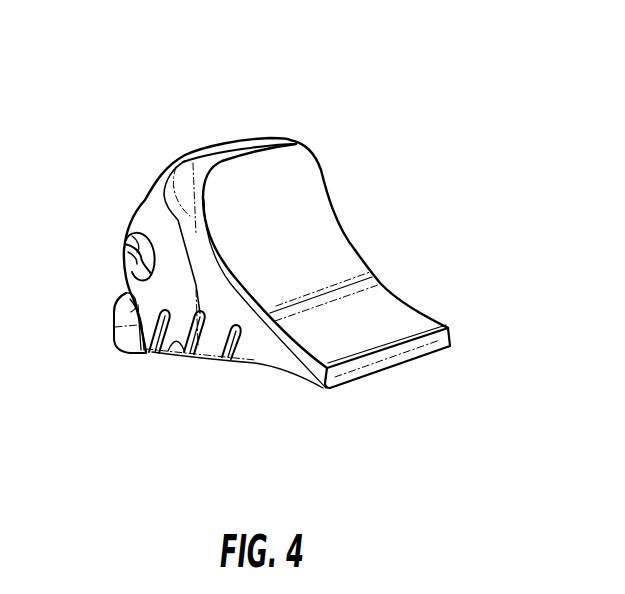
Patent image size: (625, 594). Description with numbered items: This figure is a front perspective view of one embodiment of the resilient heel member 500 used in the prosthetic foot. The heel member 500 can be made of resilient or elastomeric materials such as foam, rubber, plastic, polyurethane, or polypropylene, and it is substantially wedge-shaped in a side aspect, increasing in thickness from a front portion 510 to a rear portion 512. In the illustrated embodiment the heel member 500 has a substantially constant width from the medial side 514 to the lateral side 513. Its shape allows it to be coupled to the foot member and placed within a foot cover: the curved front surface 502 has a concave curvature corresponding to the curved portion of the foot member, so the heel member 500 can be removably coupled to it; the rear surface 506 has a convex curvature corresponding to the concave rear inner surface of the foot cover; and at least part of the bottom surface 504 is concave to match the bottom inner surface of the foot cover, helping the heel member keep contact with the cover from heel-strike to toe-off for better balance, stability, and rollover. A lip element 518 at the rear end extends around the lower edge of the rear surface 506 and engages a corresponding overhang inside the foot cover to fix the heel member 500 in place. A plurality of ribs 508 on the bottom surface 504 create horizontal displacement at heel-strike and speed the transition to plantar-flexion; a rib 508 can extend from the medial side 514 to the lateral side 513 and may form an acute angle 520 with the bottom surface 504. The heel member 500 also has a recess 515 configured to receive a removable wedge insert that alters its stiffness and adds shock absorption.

The heel member 500 is at (405, 187).
The front surface 502 is at (319, 262).
The bottom surface 504 is at (247, 372).
The rear surface 506 is at (139, 202).
The rib 508 is at (157, 351).
The front portion 510 is at (462, 333).
The rear portion 512 is at (159, 157).
The lateral side 513 is at (258, 346).
The medial side 514 is at (335, 188).
The recess 515 is at (126, 246).
The lip element 518 is at (113, 318).
The acute angle 520 is at (177, 355).